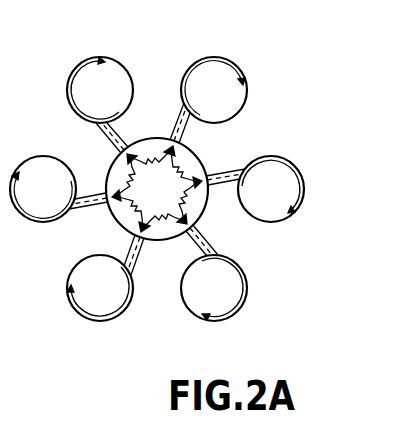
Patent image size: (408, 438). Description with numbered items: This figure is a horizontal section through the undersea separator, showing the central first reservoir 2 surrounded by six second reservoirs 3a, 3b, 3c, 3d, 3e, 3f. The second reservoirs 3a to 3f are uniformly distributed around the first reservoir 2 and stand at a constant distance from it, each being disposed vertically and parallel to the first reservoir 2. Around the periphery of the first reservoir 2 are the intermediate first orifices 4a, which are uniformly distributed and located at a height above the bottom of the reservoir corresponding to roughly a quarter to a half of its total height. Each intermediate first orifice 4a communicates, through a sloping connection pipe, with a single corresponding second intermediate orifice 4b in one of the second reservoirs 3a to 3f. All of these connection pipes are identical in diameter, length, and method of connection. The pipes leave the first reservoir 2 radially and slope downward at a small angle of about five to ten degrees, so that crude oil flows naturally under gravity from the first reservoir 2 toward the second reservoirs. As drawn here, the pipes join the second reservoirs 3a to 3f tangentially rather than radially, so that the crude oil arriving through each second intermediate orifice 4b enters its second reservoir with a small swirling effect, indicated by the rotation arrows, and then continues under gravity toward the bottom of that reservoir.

The central first reservoir 2 is at (200, 151).
The second reservoir 3a is at (222, 58).
The second reservoir 3b is at (292, 158).
The second reservoir 3c is at (248, 286).
The second reservoir 3d is at (120, 321).
The second reservoir 3e is at (22, 214).
The second reservoir 3f is at (110, 60).
The intermediate first orifice 4a is at (142, 150).
The second intermediate orifice 4b is at (97, 125).